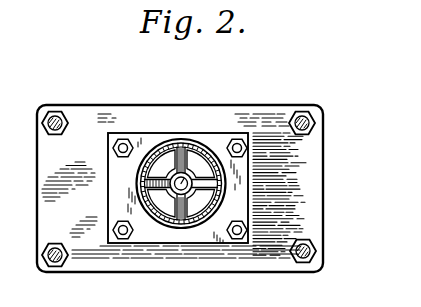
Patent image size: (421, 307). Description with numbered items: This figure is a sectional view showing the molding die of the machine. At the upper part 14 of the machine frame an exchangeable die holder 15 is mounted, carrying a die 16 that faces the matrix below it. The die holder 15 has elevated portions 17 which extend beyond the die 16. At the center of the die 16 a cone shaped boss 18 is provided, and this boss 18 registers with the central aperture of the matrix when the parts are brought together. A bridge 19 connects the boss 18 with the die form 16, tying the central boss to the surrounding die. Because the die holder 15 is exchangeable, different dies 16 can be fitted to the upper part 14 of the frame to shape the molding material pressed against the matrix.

The upper part of the machine frame 14 is at (180, 188).
The exchangeable die holder 15 is at (204, 238).
The die 16 is at (179, 153).
The elevated portions 17 is at (181, 187).
The cone shaped boss 18 is at (198, 149).
The bridge 19 is at (199, 133).